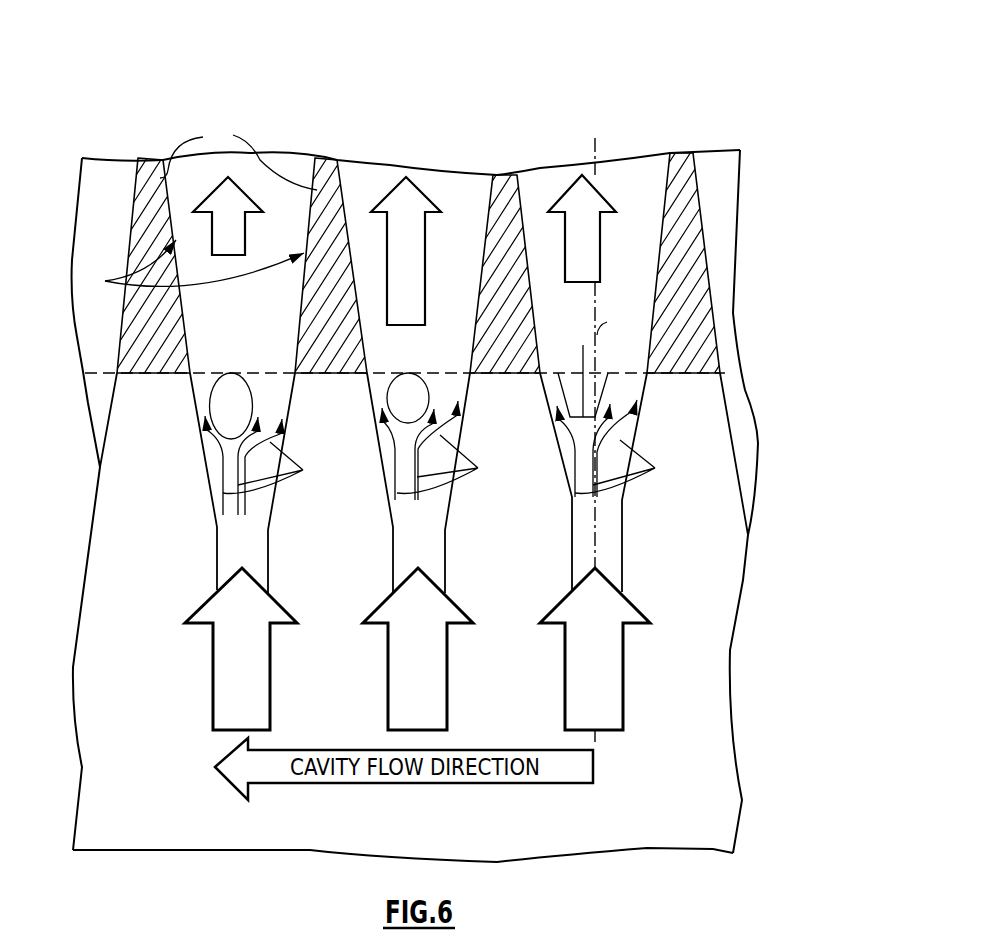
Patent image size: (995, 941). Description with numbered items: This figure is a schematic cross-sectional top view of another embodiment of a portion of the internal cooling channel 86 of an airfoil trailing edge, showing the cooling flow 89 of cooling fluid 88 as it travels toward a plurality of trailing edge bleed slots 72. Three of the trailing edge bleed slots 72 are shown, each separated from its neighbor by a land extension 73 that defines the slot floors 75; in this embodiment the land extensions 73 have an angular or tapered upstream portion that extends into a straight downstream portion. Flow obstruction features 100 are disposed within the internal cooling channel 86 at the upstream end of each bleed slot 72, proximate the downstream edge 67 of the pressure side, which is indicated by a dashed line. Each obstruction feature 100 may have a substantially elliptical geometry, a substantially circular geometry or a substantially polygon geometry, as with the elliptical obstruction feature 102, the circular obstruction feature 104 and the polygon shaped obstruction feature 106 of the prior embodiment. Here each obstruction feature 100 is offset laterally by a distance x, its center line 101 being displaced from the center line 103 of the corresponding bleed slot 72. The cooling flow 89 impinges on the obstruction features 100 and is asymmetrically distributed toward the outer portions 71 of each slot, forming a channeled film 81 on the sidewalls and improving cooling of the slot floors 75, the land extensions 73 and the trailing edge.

The internal cooling channel 86 is at (84, 68).
The downstream edge 67 is at (737, 372).
The trailing edge bleed slots 72 is at (268, 165).
The land extensions 73 is at (148, 158).
The channeled film 81 is at (238, 156).
The slot floor 75 is at (291, 249).
The outer portions 71 is at (192, 268).
The obstruction features 100 is at (231, 371).
The center line of obstruction feature 101 is at (583, 345).
The substantially elliptical obstruction feature 102 is at (212, 397).
The center line of bleed slot 103 is at (597, 310).
The substantially circular obstruction feature 104 is at (390, 385).
The substantially polygon shaped obstruction feature 106 is at (562, 390).
The cooling fluid 88 is at (272, 697).
The cooling flow 89 is at (461, 458).